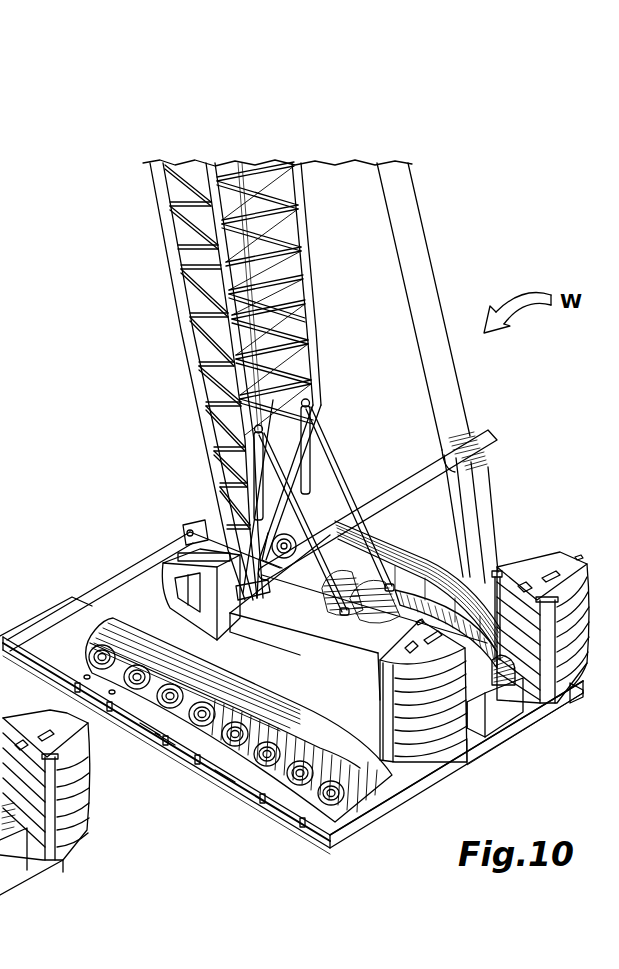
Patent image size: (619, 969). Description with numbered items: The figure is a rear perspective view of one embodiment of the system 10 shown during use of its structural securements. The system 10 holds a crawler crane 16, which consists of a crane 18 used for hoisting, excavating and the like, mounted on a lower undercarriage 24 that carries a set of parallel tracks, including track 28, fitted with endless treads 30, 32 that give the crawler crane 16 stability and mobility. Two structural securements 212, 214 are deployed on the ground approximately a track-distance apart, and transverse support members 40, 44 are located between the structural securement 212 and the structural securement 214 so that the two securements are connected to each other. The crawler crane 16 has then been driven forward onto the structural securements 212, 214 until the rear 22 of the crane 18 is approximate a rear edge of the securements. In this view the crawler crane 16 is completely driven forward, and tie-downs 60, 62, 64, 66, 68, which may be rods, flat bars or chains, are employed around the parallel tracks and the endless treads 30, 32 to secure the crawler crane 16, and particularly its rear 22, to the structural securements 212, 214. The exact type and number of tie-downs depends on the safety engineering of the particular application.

The system 10 is at (150, 547).
The crawler crane 16 is at (440, 767).
The crane 18 is at (175, 600).
The rear 22 is at (505, 712).
The lower undercarriage 24 is at (480, 750).
The track 28 is at (397, 548).
The endless tread 30 is at (205, 743).
The endless tread 32 is at (423, 548).
The transverse support member 40 is at (130, 577).
The transverse support member 44 is at (412, 787).
The tie-down 60 is at (248, 770).
The tie-down 62 is at (290, 786).
The tie-down 64 is at (325, 806).
The tie-down 66 is at (470, 577).
The tie-down 68 is at (497, 572).
The structural securement 212 is at (157, 740).
The structural securement 214 is at (193, 526).